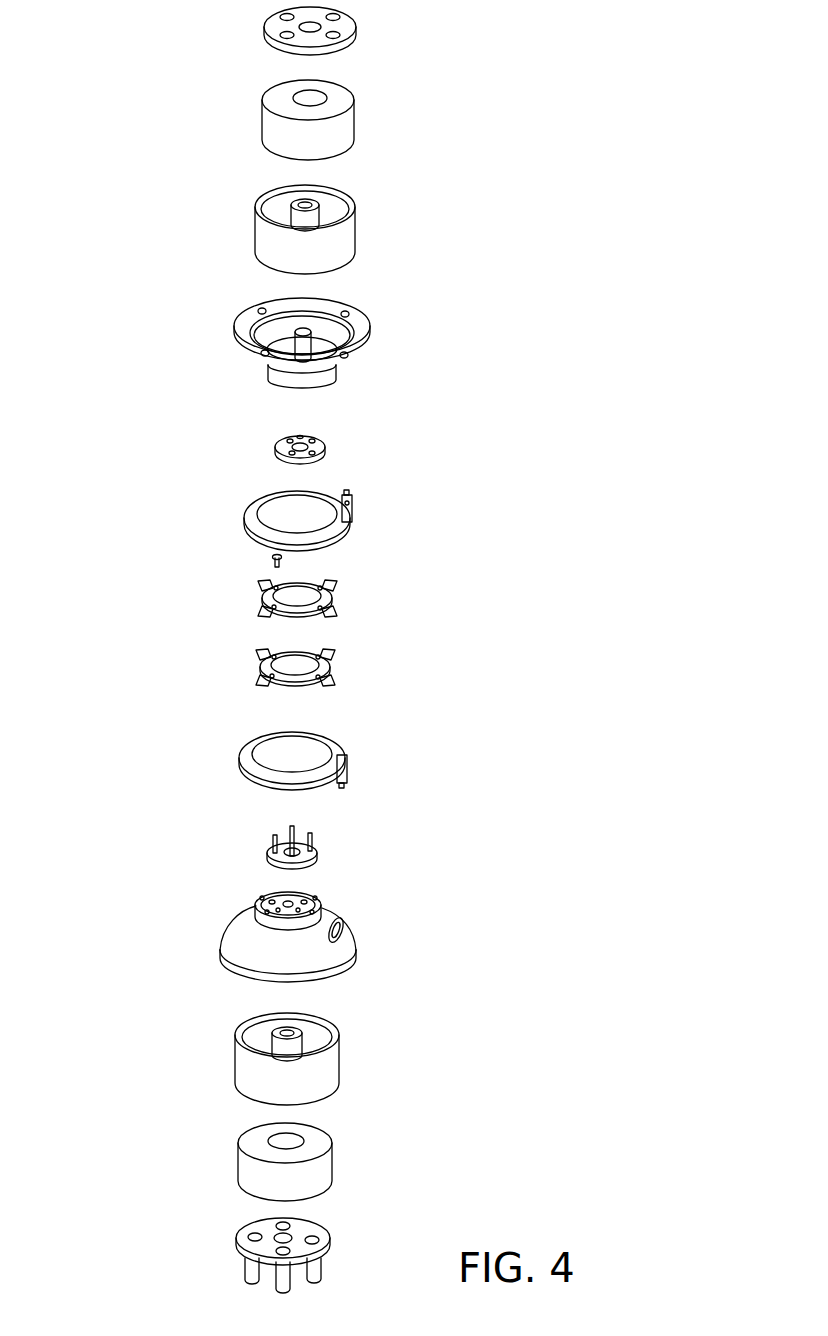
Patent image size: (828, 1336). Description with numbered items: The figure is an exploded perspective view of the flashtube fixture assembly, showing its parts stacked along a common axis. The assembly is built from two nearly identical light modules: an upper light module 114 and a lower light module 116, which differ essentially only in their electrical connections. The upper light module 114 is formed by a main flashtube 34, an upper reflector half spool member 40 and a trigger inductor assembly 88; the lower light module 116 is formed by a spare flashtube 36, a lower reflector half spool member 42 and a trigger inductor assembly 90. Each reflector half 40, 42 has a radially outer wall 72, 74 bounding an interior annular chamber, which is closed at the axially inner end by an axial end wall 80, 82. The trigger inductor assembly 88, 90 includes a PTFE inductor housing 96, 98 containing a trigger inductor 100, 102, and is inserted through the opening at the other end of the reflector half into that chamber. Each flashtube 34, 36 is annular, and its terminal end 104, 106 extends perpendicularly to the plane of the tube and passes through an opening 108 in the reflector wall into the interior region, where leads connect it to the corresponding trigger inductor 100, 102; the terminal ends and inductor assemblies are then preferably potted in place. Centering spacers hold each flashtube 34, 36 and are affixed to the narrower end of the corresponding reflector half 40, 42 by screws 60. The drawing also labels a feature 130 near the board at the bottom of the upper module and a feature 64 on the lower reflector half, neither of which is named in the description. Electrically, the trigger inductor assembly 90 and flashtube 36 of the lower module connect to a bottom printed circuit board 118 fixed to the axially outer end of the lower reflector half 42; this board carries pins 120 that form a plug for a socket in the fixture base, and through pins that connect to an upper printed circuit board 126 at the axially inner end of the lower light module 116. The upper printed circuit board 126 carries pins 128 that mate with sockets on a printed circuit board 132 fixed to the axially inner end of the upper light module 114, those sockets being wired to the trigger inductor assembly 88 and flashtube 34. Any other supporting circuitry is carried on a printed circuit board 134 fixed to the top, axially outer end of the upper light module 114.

The printed circuit board 134 is at (356, 30).
The trigger inductor 100 is at (354, 120).
The trigger inductor assembly 88 is at (340, 224).
The PTFE inductor housing 96 is at (355, 207).
The upper light module 114 is at (192, 286).
The upper reflector half spool member 40 is at (335, 357).
The radially outer wall 72 is at (360, 356).
The axial end wall 80 is at (330, 383).
The printed circuit board 132 is at (325, 447).
The disc 130 is at (348, 463).
The terminal end 104 is at (353, 515).
The flashtube 34 is at (341, 530).
The screw 60 is at (270, 560).
The flashtube 36 is at (330, 769).
The terminal end 106 is at (346, 776).
The pins 128 is at (313, 838).
The upper printed circuit board 126 is at (339, 855).
The axial end wall 82 is at (320, 904).
The opening 108 is at (347, 928).
The lower reflector half spool member 42 is at (329, 967).
The radially outer wall 74 is at (323, 960).
The base rim 64 is at (328, 978).
The lower light module 116 is at (192, 995).
The trigger inductor assembly 90 is at (319, 1062).
The PTFE inductor housing 98 is at (322, 1078).
The trigger inductor 102 is at (333, 1165).
The printed circuit board 118 is at (320, 1253).
The pins 120 is at (323, 1270).